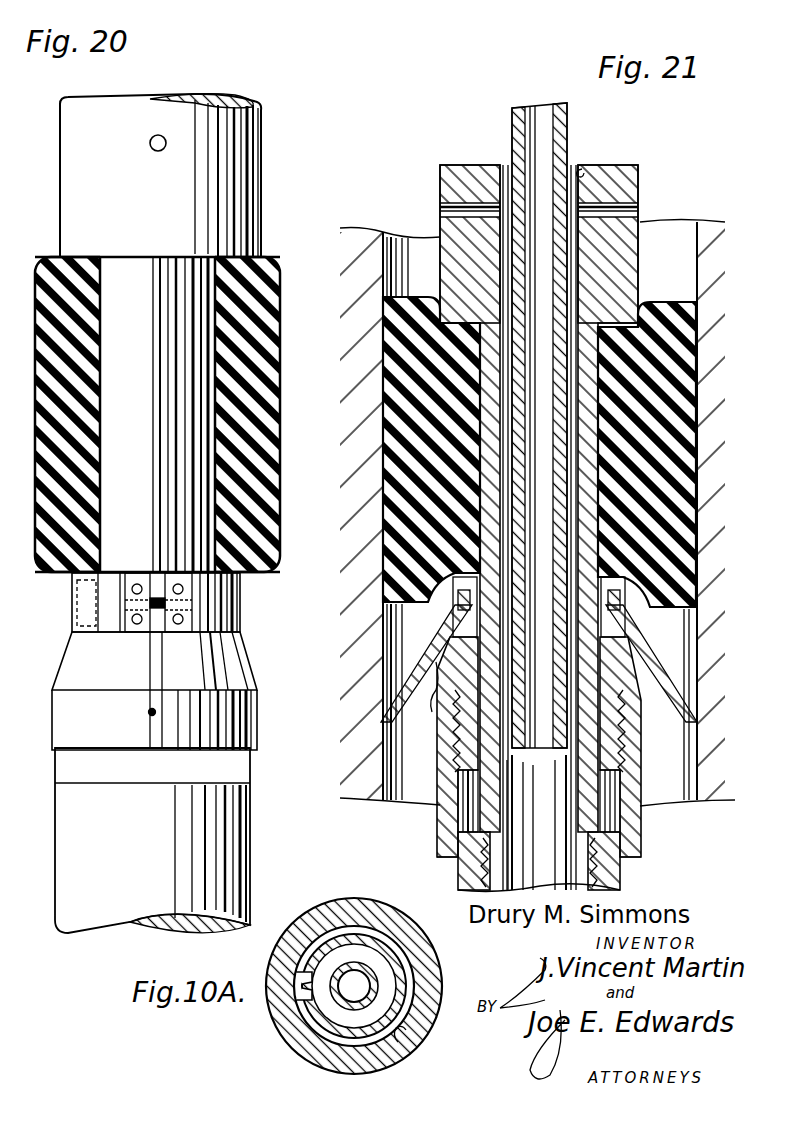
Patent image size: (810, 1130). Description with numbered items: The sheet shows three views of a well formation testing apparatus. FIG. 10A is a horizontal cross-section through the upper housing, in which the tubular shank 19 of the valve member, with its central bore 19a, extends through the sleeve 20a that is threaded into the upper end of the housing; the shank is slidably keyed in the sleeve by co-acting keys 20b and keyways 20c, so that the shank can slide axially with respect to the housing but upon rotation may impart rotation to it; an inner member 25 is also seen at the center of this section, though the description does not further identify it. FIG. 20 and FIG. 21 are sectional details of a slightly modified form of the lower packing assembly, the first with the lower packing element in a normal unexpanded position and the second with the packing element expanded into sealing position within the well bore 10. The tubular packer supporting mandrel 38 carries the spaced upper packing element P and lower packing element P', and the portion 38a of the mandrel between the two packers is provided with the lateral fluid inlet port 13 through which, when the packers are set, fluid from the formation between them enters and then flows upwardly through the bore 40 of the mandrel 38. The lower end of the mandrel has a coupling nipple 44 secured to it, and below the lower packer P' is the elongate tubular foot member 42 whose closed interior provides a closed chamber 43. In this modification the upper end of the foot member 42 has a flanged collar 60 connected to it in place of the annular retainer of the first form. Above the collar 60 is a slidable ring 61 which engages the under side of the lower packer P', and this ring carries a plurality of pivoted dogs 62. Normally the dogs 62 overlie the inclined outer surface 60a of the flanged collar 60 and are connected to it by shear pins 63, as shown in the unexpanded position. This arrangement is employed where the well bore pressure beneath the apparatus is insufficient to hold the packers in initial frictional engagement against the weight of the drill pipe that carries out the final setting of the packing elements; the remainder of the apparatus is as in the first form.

In FIG. 20, the fluid inlet port 13 is at (151, 146).
In FIG. 21, the fluid inlet port 13 is at (641, 212).
In FIG. 20, the portion of mandrel between packing elements 38a is at (232, 226).
In FIG. 21, the portion of mandrel between packing elements 38a is at (640, 180).
In FIG. 20, the lower packing element P' is at (176, 414).
In FIG. 20, the slidable ring 61 is at (224, 588).
In FIG. 21, the slidable ring 61 is at (625, 600).
In FIG. 20, the pivoted dog 62 is at (248, 688).
In FIG. 21, the pivoted dog 62 is at (440, 642).
In FIG. 20, the shear pin 63 is at (150, 712).
In FIG. 21, the shear pin 63 is at (648, 652).
In FIG. 20, the inclined outer surface 60a is at (228, 724).
In FIG. 21, the inclined outer surface 60a is at (415, 699).
In FIG. 20, the tubular foot member 42 is at (234, 852).
In FIG. 21, the tubular foot member 42 is at (622, 786).
In FIG. 21, the rod 25 is at (567, 124).
In FIG. 10A, the rod 25 is at (372, 972).
In FIG. 21, the bore of supporting mandrel 40 is at (582, 172).
In FIG. 21, the well bore 10 is at (692, 256).
In FIG. 21, the packer supporting mandrel 38 is at (600, 381).
In FIG. 21, the upper packing element P is at (567, 452).
In FIG. 21, the flanged collar 60 is at (617, 726).
In FIG. 21, the closed chamber 43 is at (608, 835).
In FIG. 21, the coupling nipple 44 is at (608, 888).
In FIG. 10A, the sleeve 20a is at (278, 958).
In FIG. 10A, the key 20b is at (305, 977).
In FIG. 10A, the keyway 20c is at (300, 1010).
In FIG. 10A, the tubular shank 19 is at (402, 1008).
In FIG. 10A, the bore of tubular shank 19a is at (388, 1034).